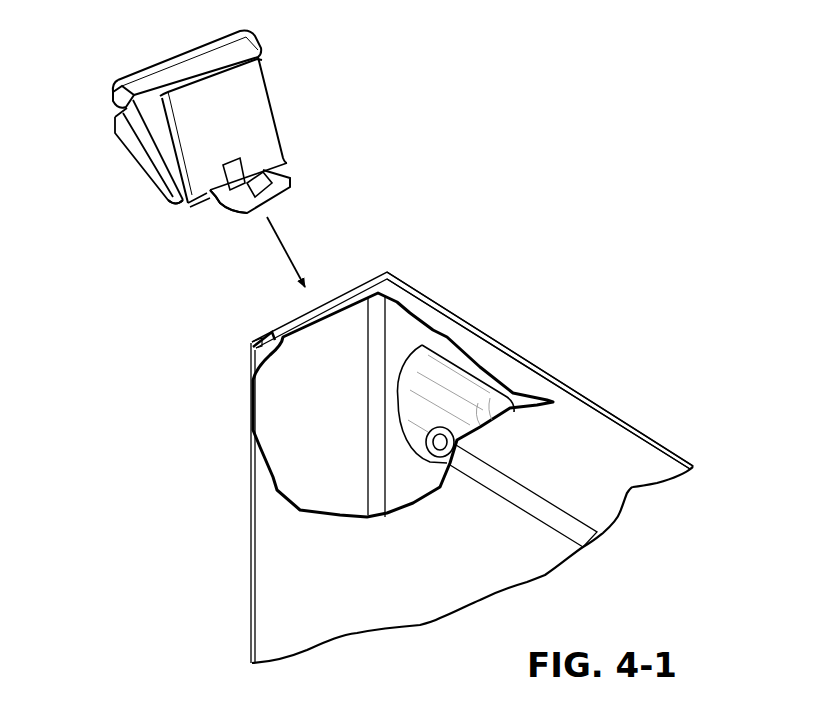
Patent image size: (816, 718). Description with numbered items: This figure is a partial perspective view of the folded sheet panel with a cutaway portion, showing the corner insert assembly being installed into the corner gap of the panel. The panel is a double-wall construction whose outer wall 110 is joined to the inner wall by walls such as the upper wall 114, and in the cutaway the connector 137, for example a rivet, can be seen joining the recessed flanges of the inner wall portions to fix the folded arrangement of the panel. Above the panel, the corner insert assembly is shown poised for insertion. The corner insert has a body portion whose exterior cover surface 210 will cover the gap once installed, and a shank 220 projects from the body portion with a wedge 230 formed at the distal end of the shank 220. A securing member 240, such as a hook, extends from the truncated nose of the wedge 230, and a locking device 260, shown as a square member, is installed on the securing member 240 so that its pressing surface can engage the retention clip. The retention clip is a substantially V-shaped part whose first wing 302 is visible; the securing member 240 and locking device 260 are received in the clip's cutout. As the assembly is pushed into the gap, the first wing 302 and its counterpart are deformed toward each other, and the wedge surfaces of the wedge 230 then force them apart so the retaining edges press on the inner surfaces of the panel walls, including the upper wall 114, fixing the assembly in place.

The outer wall 110 is at (272, 530).
The upper wall 114 is at (612, 446).
The connector 137 is at (455, 438).
The exterior cover surface 210 is at (154, 55).
The shank 220 is at (141, 150).
The wedge 230 is at (171, 202).
The securing member 240 is at (286, 181).
The locking device 260 is at (213, 192).
The first wing 302 is at (247, 130).